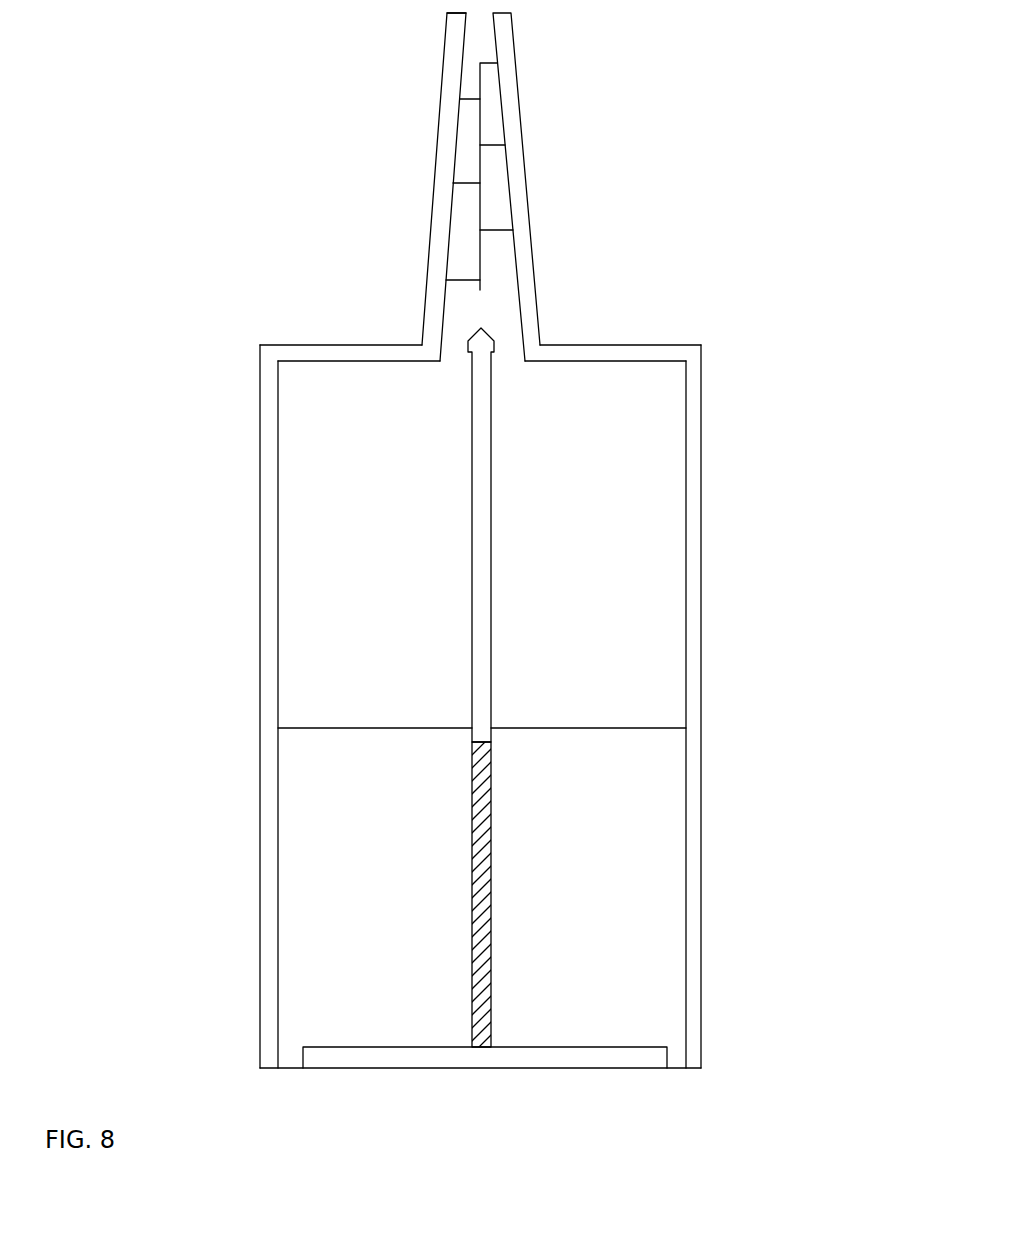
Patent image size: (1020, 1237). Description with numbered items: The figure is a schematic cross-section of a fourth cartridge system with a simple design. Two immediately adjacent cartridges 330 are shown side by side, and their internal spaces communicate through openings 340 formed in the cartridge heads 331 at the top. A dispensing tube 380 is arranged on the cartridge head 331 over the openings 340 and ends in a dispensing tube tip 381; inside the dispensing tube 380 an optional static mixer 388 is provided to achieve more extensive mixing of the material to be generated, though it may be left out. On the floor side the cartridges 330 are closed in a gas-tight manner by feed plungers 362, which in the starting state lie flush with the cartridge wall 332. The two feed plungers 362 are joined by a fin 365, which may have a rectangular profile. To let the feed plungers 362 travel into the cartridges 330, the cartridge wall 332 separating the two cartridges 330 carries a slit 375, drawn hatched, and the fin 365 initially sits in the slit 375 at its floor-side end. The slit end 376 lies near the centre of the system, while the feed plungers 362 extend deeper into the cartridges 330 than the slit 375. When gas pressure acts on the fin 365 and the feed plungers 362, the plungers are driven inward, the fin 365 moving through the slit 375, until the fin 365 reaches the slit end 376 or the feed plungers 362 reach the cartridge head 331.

The cartridge 330 is at (578, 429).
The cartridge head 331 is at (607, 344).
The cartridge wall 332 is at (259, 465).
The opening 340 is at (434, 345).
The feed plunger 362 is at (340, 763).
The fin 365 is at (559, 1050).
The slit 375 is at (468, 883).
The slit end 376 is at (469, 739).
The dispensing tube 380 is at (436, 152).
The dispensing tube tip 381 is at (461, 32).
The static mixer 388 is at (466, 213).